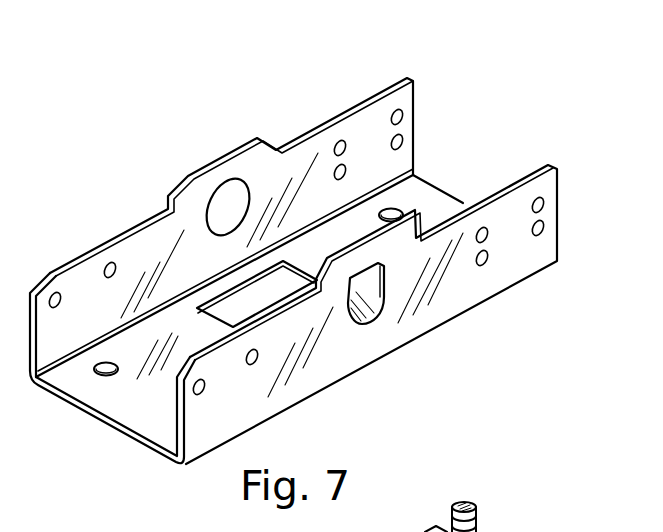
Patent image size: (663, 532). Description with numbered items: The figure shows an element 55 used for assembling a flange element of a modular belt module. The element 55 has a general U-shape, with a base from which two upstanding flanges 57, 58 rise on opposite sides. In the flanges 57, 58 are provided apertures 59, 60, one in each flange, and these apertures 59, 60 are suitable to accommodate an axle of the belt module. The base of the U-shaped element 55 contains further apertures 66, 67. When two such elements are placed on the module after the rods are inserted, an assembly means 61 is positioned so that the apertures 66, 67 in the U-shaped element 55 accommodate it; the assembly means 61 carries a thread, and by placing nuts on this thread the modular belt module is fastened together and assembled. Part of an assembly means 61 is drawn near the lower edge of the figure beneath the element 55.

The element 55 is at (209, 153).
The upstanding flange 57 is at (530, 177).
The upstanding flange 58 is at (380, 92).
The aperture 59 is at (363, 298).
The aperture 60 is at (227, 205).
The assembly means 61 is at (483, 531).
The aperture 66 is at (397, 211).
The aperture 67 is at (100, 378).